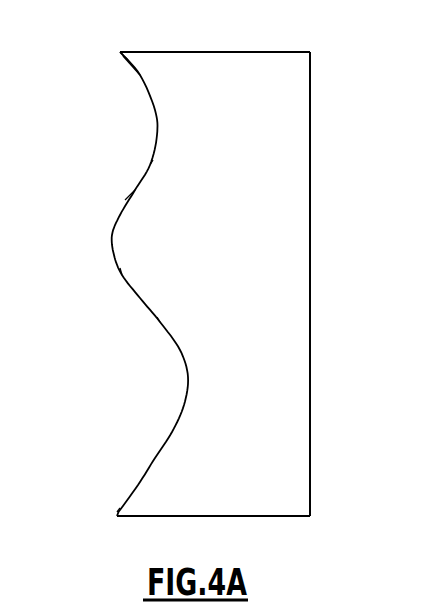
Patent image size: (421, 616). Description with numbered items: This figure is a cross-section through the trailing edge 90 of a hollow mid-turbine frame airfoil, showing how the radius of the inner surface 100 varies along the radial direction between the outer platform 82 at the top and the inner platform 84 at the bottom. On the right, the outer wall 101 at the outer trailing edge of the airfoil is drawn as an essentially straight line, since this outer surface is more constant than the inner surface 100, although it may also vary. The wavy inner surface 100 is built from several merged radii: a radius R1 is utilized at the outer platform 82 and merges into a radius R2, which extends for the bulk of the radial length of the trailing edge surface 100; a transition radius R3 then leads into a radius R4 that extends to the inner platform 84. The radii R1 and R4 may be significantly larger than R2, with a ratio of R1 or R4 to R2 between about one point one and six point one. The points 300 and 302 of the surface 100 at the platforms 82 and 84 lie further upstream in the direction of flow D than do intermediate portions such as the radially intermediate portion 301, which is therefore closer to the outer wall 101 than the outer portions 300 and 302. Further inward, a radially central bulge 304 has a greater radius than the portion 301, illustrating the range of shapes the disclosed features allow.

The trailing edge 90 is at (333, 126).
The outer platform 82 is at (157, 52).
The inner platform 84 is at (200, 516).
The outer wall 101 is at (310, 243).
The inner surface 100 is at (112, 233).
The point of the surface at the outer platform 300 is at (120, 52).
The radially intermediate portion 301 is at (153, 160).
The point of the surface at the inner platform 302 is at (117, 515).
The radially central bulge 304 is at (120, 268).
The radius R1 is at (123, 57).
The radius R2 is at (125, 200).
The transition radius R3 is at (157, 317).
The radius R4 is at (117, 512).
The direction of flow D is at (64, 125).